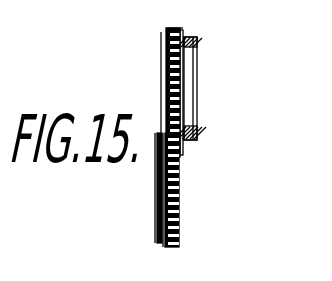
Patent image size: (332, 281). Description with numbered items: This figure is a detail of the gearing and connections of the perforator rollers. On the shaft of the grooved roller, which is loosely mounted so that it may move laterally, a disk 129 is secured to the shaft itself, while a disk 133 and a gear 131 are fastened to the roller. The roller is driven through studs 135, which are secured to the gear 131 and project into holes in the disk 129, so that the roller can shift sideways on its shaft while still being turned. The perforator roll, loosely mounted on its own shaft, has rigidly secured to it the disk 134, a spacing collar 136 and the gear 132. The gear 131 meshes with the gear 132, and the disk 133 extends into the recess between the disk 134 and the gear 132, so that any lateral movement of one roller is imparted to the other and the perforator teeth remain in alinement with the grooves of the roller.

The disk 129 is at (190, 85).
The gear 131 is at (186, 17).
The gear 132 is at (177, 201).
The disk 133 is at (160, 90).
The disk 134 is at (157, 219).
The studs 135 is at (200, 47).
The spacing collar 136 is at (178, 172).